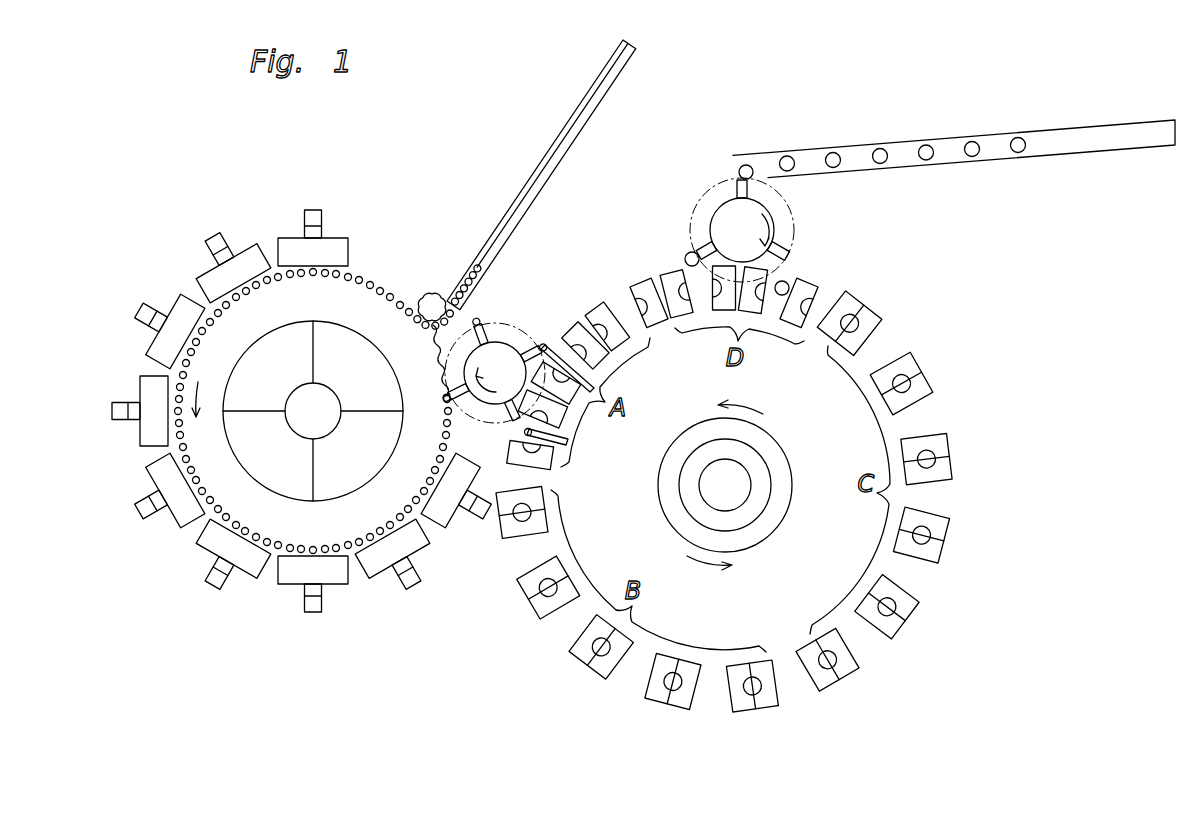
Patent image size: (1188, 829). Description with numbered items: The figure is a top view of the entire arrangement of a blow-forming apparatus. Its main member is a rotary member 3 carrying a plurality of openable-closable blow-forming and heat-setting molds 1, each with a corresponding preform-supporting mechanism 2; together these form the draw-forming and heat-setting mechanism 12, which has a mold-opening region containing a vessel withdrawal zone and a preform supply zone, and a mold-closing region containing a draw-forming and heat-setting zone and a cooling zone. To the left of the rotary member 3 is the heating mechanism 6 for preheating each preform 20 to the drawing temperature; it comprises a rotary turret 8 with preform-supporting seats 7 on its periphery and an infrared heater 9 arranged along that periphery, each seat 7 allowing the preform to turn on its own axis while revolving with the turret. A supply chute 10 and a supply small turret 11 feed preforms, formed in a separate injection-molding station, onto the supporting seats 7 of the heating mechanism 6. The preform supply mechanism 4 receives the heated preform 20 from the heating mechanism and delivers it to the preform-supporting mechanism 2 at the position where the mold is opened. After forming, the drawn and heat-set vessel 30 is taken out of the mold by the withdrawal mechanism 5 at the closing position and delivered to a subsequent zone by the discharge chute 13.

The blow-forming and heat-setting mold 1 is at (955, 457).
The preform-supporting mechanism 2 is at (590, 370).
The rotary member 3 is at (778, 518).
The preform supply mechanism 4 is at (518, 308).
The withdrawal mechanism 5 is at (810, 217).
The heating mechanism 6 is at (308, 454).
The preform-supporting seat 7 is at (430, 338).
The rotary turret 8 is at (343, 330).
The infrared heater 9 is at (337, 588).
The supply chute 10 is at (532, 167).
The supply small turret 11 is at (425, 297).
The draw-forming and heat-setting mechanism 12 is at (745, 489).
The discharge chute 13 is at (948, 142).
The preform 20 is at (470, 262).
The vessel 30 is at (835, 152).